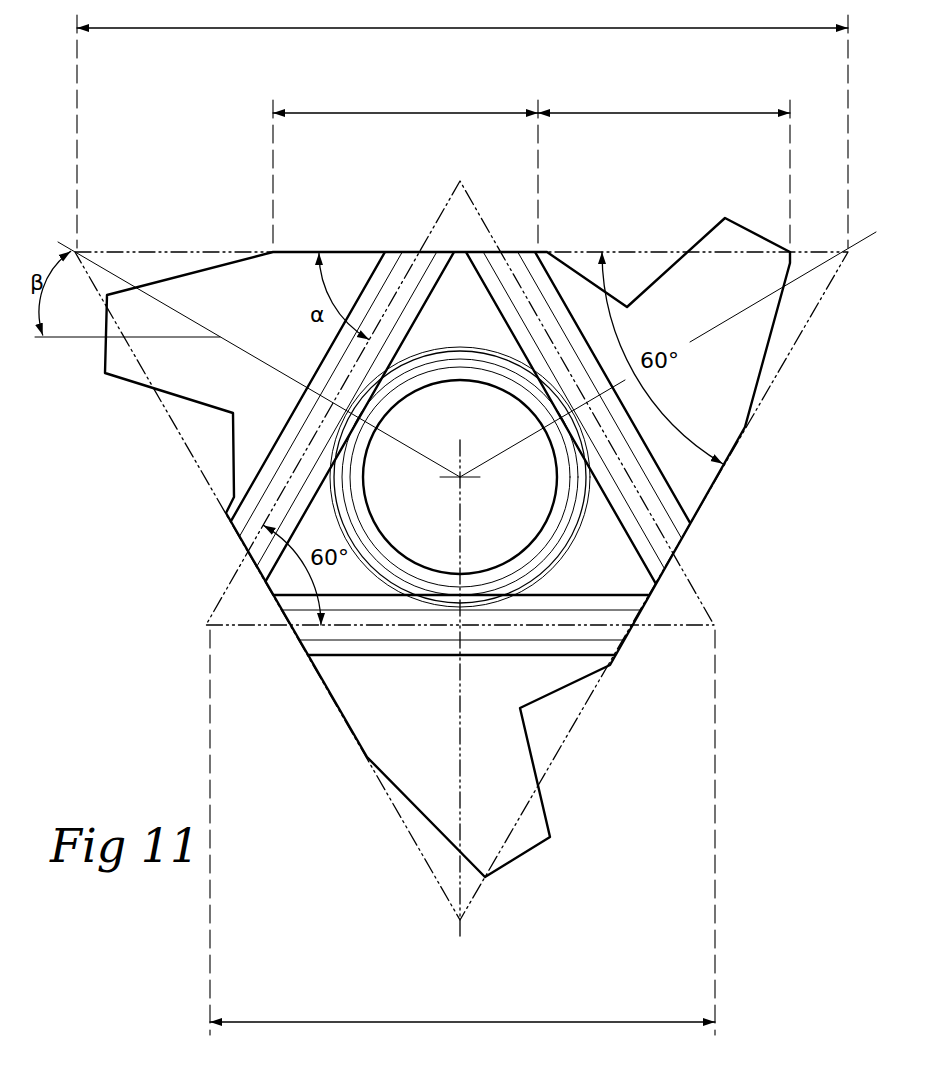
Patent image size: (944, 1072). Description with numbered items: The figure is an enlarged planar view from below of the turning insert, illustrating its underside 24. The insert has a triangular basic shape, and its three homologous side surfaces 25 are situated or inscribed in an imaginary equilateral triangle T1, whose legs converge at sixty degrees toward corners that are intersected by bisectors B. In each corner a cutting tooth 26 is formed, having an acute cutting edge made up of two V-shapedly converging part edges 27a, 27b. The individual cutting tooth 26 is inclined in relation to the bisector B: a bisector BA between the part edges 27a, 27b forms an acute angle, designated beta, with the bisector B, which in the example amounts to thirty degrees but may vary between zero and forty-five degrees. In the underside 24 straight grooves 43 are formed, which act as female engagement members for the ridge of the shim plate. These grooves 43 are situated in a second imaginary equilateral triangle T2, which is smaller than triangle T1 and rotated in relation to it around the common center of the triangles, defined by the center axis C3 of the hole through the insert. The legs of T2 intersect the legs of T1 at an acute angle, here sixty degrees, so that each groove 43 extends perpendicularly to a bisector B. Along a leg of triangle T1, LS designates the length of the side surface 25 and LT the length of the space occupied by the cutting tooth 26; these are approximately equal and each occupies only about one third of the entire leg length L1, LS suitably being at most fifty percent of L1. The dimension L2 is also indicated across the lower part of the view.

The underside 24 is at (508, 766).
The side surface 25 is at (357, 251).
The tooth 26 is at (708, 228).
The part edge 27a is at (437, 828).
The part edge 27b is at (547, 793).
The groove 43 is at (347, 367).
The center axis C3 is at (457, 480).
The bisector B is at (726, 327).
The bisector BA is at (160, 338).
The imaginary triangle T1 is at (803, 327).
The imaginary triangle T2 is at (670, 629).
The length of triangle leg L1 is at (462, 125).
The length of side surface LS is at (405, 167).
The length of space occupied by cutting tooth LT is at (664, 167).
The length L2 is at (462, 832).